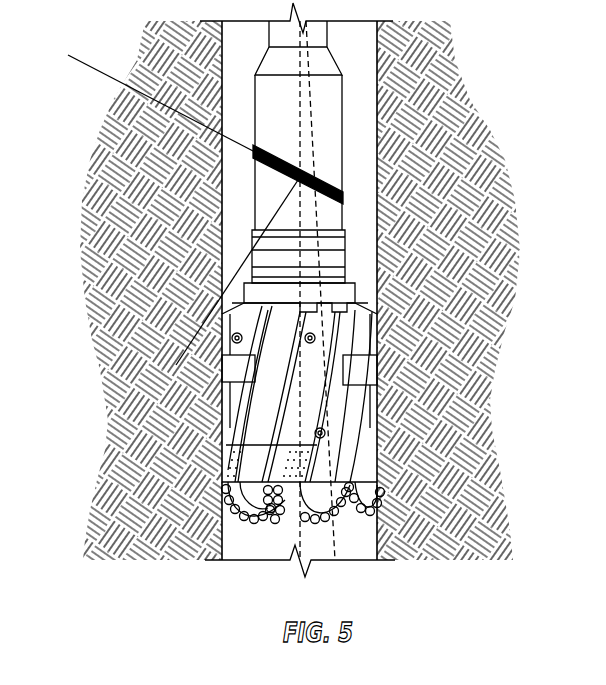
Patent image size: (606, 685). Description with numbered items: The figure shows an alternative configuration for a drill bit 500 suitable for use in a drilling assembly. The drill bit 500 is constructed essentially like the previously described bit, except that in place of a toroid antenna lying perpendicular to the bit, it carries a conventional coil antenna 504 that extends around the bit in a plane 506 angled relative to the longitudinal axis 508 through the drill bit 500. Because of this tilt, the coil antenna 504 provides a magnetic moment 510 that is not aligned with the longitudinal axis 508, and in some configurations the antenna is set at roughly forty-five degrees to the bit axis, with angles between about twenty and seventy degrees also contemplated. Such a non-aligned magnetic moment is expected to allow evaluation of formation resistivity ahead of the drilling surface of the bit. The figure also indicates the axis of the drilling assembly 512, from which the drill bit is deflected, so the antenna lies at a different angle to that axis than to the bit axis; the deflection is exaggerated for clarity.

The drill bit 500 is at (322, 305).
The coil antenna 504 is at (285, 129).
The plane 506 is at (98, 70).
The longitudinal axis 508 is at (300, 530).
The magnetic moment 510 is at (207, 320).
The axis of the drilling assembly 512 is at (333, 548).